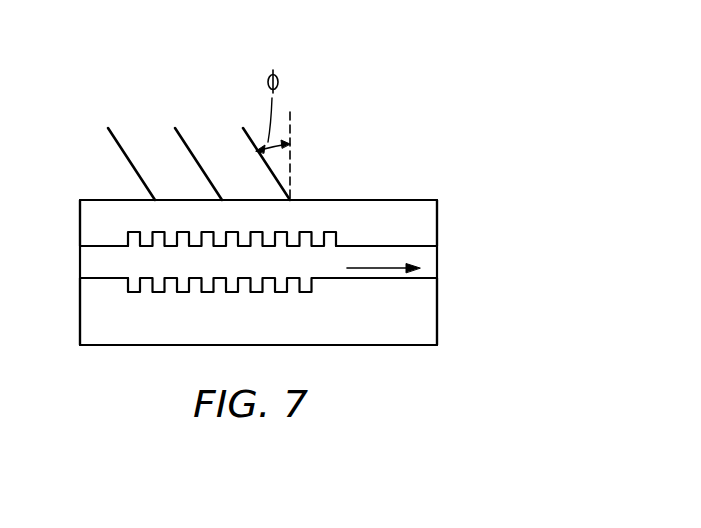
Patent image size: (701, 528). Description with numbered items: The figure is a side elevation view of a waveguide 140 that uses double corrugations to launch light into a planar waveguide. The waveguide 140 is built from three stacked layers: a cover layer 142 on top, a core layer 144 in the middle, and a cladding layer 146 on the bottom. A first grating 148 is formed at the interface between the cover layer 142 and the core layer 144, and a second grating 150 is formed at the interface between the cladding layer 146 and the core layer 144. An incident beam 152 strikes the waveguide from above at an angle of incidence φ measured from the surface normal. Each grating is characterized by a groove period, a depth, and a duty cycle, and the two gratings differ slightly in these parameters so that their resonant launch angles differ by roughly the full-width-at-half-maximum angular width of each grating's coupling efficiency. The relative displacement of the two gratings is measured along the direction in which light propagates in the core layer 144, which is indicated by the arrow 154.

The waveguide 140 is at (419, 159).
The cover layer 142 is at (430, 231).
The core layer 144 is at (433, 263).
The cladding layer 146 is at (427, 318).
The first grating 148 is at (135, 232).
The second grating 150 is at (168, 292).
The incident beam 152 is at (248, 122).
The arrow 154 is at (380, 267).